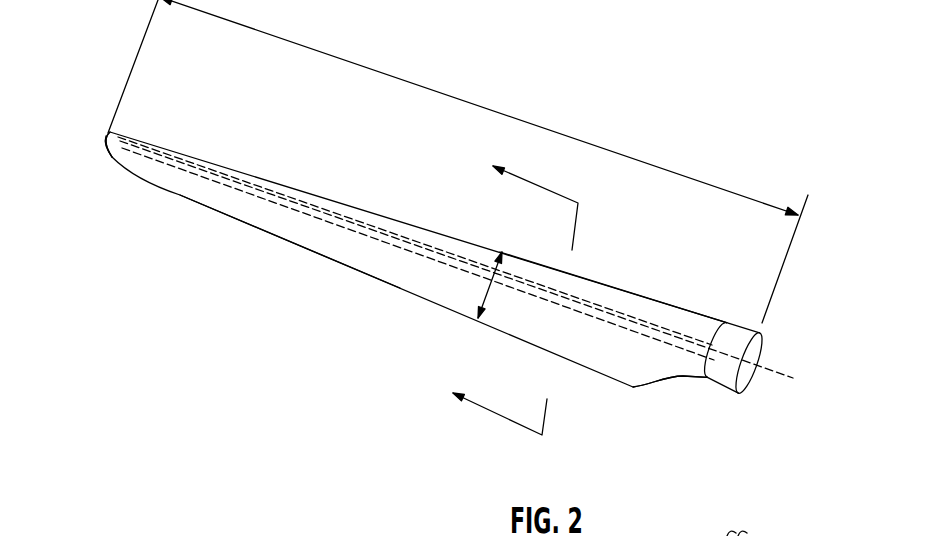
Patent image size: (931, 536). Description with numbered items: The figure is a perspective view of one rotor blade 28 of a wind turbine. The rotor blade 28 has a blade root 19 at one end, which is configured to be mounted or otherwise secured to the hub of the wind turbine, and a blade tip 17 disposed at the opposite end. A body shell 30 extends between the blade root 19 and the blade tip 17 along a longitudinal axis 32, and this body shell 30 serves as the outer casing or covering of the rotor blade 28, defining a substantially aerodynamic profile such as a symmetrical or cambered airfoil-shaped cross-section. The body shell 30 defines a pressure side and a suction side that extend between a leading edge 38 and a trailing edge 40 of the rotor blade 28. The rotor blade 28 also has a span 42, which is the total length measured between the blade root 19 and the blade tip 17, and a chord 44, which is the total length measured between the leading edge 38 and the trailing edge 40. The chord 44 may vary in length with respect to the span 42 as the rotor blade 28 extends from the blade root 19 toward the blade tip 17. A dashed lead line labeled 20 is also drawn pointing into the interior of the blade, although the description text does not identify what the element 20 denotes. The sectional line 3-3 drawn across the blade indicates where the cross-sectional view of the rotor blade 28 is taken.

The blade tip 17 is at (108, 132).
The blade root 19 is at (718, 383).
The rotor blade 20 is at (383, 243).
The rotor blade 28 is at (674, 99).
The body shell 30 is at (315, 235).
The longitudinal axis 32 is at (107, 135).
The leading edge 38 is at (618, 288).
The trailing edge 40 is at (597, 375).
The span 42 is at (408, 82).
The chord 44 is at (481, 268).
The sectional line 3- 3 is at (515, 308).